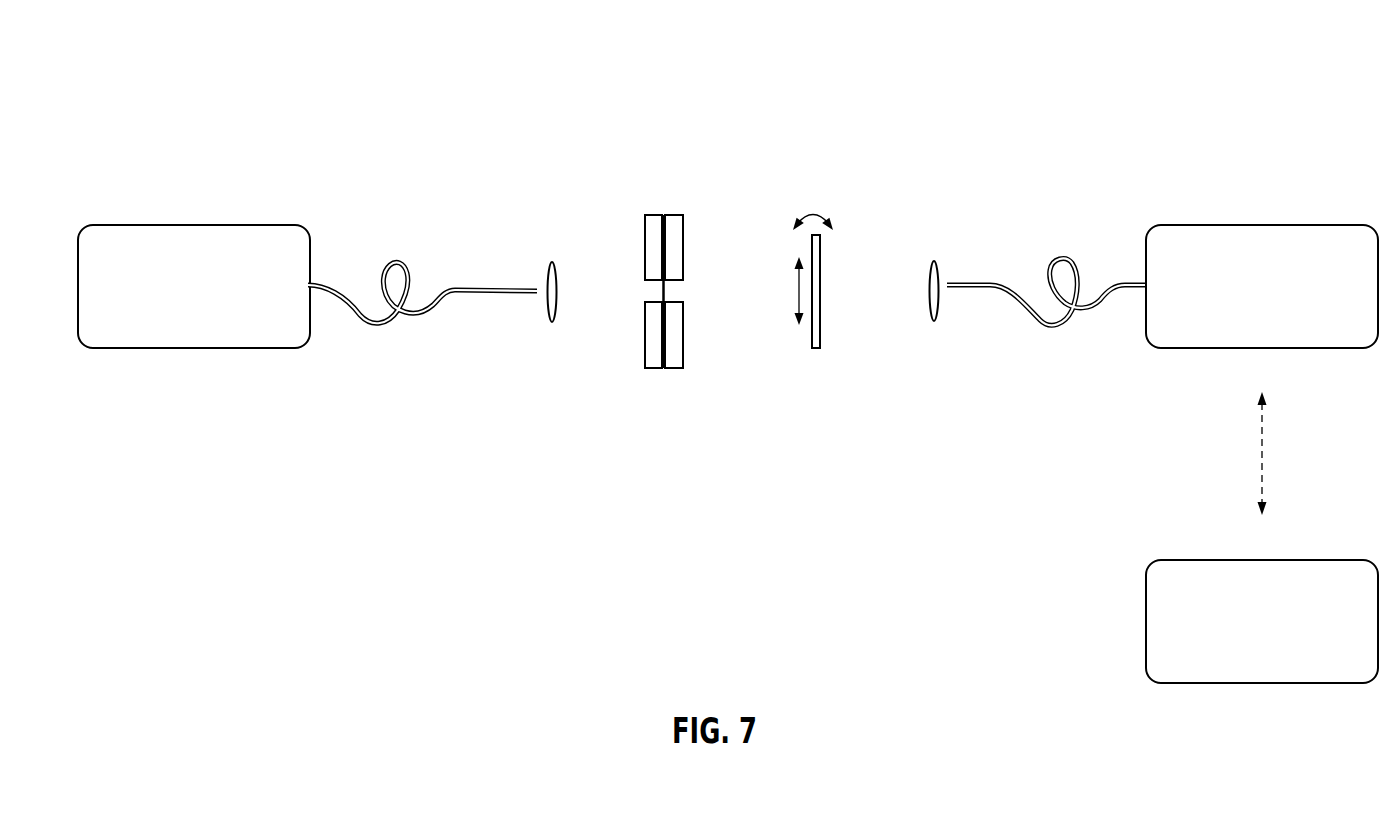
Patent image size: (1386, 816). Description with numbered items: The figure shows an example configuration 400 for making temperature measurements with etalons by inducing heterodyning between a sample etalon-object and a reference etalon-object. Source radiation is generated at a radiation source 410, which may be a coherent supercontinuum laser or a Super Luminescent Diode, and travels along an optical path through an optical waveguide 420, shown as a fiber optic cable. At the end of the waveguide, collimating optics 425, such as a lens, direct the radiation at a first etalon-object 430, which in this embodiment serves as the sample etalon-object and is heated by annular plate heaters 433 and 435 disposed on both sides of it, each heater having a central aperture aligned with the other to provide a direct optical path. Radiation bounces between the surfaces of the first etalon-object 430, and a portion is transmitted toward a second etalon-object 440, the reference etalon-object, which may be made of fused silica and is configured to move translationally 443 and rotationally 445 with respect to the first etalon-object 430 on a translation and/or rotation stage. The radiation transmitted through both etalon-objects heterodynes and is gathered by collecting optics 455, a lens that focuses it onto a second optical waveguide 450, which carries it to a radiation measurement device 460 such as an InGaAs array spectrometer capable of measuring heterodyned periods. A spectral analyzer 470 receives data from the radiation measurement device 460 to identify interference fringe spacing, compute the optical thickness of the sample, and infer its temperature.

The configuration 400 is at (138, 80).
The radiation source 410 is at (151, 225).
The optical waveguide 420 is at (382, 330).
The collimating optics 425 is at (545, 282).
The first etalon-object 430 is at (663, 184).
The annular plate heater 433 is at (652, 388).
The annular plate heater 435 is at (675, 388).
The second etalon-object 440 is at (816, 372).
The translational movement 443 is at (797, 272).
The rotational movement 445 is at (814, 214).
The optical waveguide 450 is at (1043, 327).
The collecting optics 455 is at (927, 285).
The radiation measurement device 460 is at (1306, 225).
The spectral analyzer 470 is at (1306, 560).